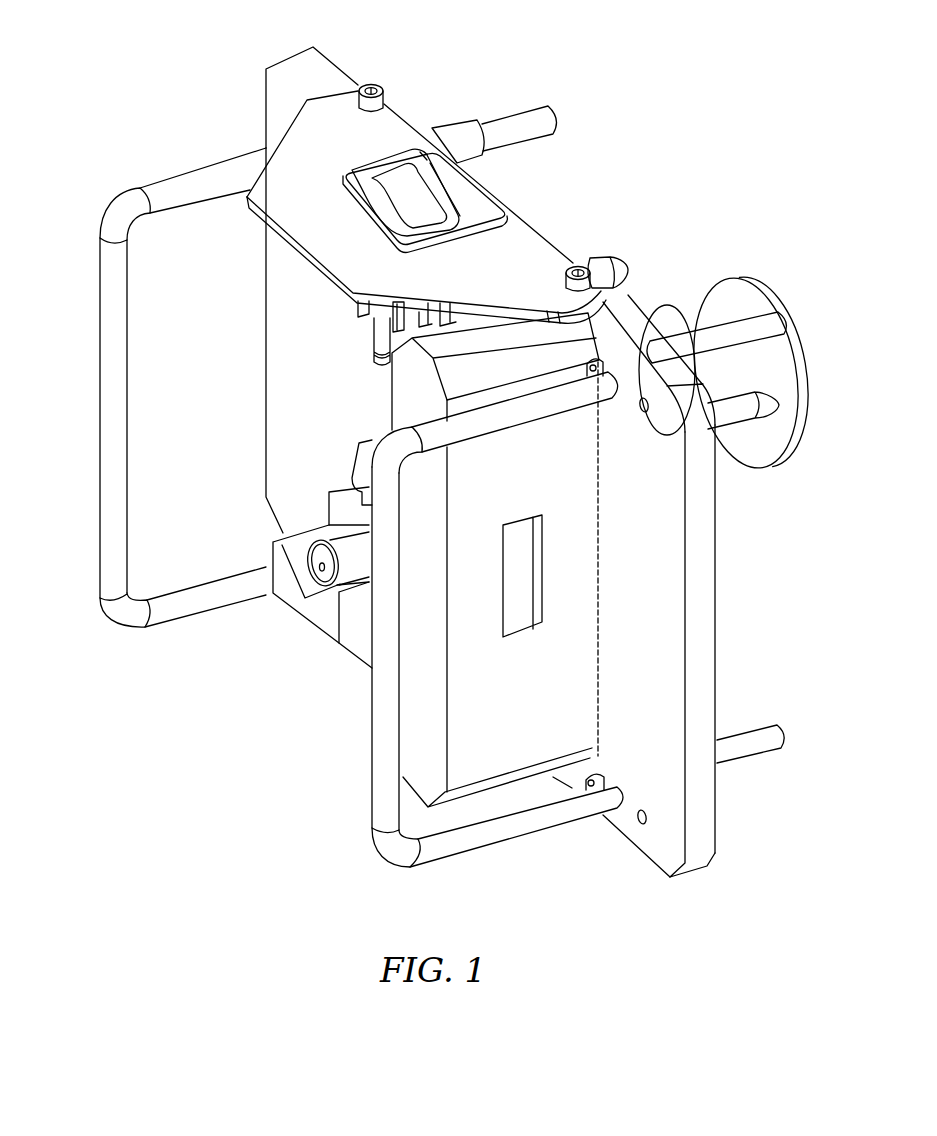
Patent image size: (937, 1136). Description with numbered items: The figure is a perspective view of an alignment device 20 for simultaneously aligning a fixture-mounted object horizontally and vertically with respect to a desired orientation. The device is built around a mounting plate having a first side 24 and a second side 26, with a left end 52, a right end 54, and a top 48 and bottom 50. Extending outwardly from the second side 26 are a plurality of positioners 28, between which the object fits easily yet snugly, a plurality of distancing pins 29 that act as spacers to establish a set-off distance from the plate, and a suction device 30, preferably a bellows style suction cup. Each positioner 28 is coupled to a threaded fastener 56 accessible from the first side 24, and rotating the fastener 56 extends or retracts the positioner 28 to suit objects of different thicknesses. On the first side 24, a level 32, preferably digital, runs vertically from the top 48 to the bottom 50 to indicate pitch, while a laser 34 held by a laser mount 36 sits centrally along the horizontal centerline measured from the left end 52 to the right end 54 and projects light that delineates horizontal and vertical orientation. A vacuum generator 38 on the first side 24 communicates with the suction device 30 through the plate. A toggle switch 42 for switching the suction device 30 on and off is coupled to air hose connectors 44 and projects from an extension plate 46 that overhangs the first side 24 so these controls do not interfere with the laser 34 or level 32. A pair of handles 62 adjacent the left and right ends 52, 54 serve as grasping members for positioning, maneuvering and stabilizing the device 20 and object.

The alignment device 20 is at (95, 116).
The first side 24 is at (678, 665).
The second side 26 is at (717, 616).
The positioners 28 is at (513, 122).
The distancing pins 29 is at (600, 262).
The suction device 30 is at (728, 282).
The level 32 is at (587, 684).
The laser 34 is at (315, 555).
The laser mount 36 is at (357, 647).
The vacuum generator 38 is at (367, 458).
The toggle switch 42 is at (392, 172).
The air hose connectors 44 is at (376, 333).
The extension plate 46 is at (318, 243).
The top 48 is at (280, 98).
The bottom 50 is at (628, 825).
The left end 52 is at (273, 393).
The right end 54 is at (677, 516).
The threaded fastener 56 is at (605, 363).
The handles 62 is at (205, 588).